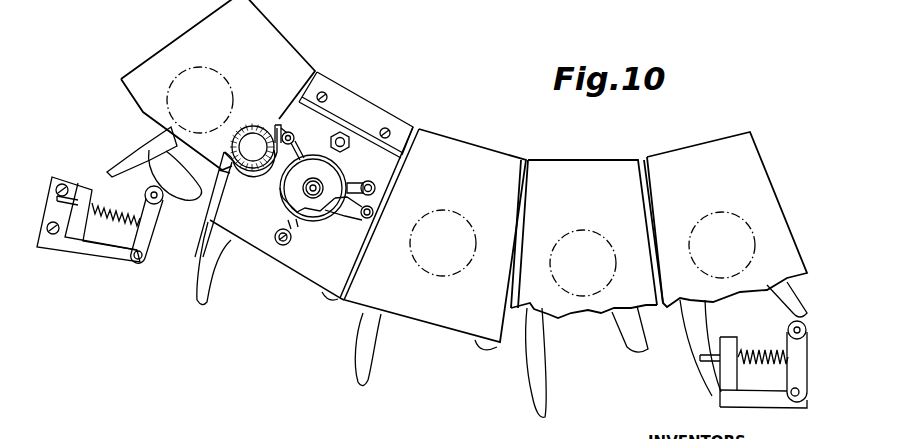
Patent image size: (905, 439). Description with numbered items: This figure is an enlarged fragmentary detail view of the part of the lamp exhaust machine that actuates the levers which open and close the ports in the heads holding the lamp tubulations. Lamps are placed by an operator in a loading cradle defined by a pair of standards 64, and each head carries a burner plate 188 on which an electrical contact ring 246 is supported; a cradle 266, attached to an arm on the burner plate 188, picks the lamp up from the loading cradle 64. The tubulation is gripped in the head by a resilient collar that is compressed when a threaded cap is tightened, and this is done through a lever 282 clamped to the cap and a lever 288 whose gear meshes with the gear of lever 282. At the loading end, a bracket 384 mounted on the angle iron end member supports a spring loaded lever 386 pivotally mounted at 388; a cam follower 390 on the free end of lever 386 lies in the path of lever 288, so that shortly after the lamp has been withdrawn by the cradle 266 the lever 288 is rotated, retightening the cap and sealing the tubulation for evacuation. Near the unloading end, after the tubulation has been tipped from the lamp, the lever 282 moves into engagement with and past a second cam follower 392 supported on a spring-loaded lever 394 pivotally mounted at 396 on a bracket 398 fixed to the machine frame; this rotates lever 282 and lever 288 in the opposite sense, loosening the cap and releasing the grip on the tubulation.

The burner plate 188 is at (373, 107).
The electrical contact ring 246 is at (283, 201).
The cradle 266 is at (347, 213).
The standards 64 is at (203, 227).
The lever 282 is at (122, 155).
The lever 288 is at (147, 117).
The bracket 384 is at (82, 245).
The spring loaded lever 386 is at (150, 240).
The pivot 388 is at (138, 259).
The cam follower 390 is at (147, 190).
The cam follower 392 is at (787, 325).
The spring-loaded lever 394 is at (790, 373).
The pivot 396 is at (793, 396).
The bracket 398 is at (728, 395).